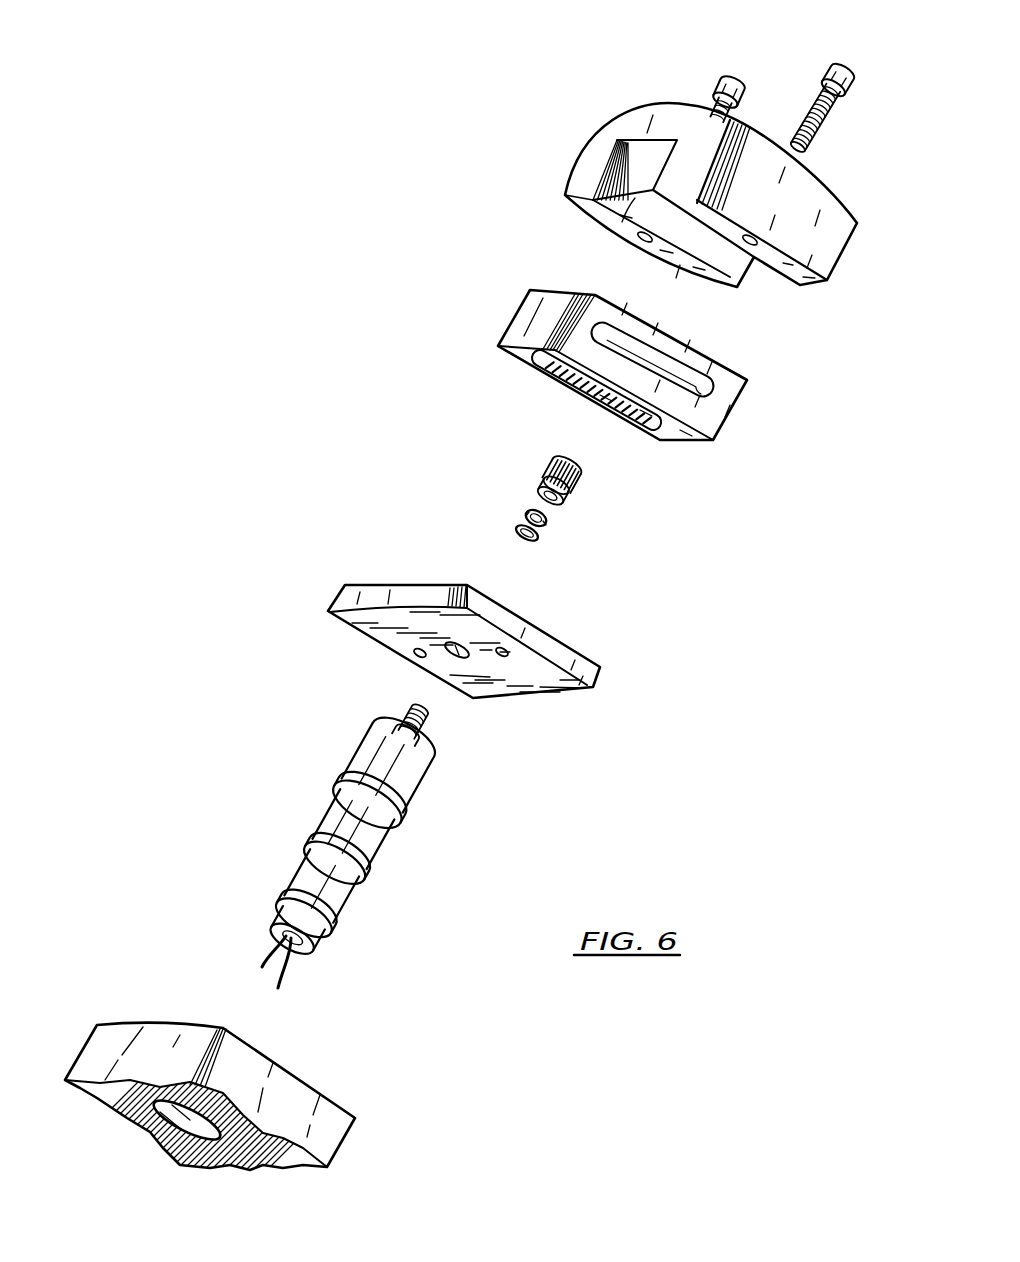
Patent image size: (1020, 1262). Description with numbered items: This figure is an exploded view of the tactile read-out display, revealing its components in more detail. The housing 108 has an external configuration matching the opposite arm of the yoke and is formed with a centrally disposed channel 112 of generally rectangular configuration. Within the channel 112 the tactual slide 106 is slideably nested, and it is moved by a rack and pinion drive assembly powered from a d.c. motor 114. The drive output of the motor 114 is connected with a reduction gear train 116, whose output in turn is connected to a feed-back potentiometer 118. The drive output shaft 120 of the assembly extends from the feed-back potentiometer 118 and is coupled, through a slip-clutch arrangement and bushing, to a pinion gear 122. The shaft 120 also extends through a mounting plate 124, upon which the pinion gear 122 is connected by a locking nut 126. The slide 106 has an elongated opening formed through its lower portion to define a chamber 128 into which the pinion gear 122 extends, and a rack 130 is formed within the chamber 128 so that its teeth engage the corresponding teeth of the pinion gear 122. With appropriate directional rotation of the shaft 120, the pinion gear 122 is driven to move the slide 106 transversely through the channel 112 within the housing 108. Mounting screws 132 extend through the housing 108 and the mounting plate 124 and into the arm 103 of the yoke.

The arm 103 is at (328, 1133).
The tactual slide 106 is at (530, 302).
The housing 108 is at (612, 128).
The channel 112 is at (606, 214).
The d.c. motor 114 is at (283, 912).
The reduction gear train 116 is at (338, 816).
The feed-back potentiometer 118 is at (372, 757).
The drive output shaft 120 is at (424, 725).
The pinion gear 122 is at (540, 468).
The mounting plate 124 is at (598, 676).
The locking nut 126 is at (548, 523).
The chamber 128 is at (642, 436).
The rack 130 is at (588, 400).
The mounting screws 132 is at (836, 69).